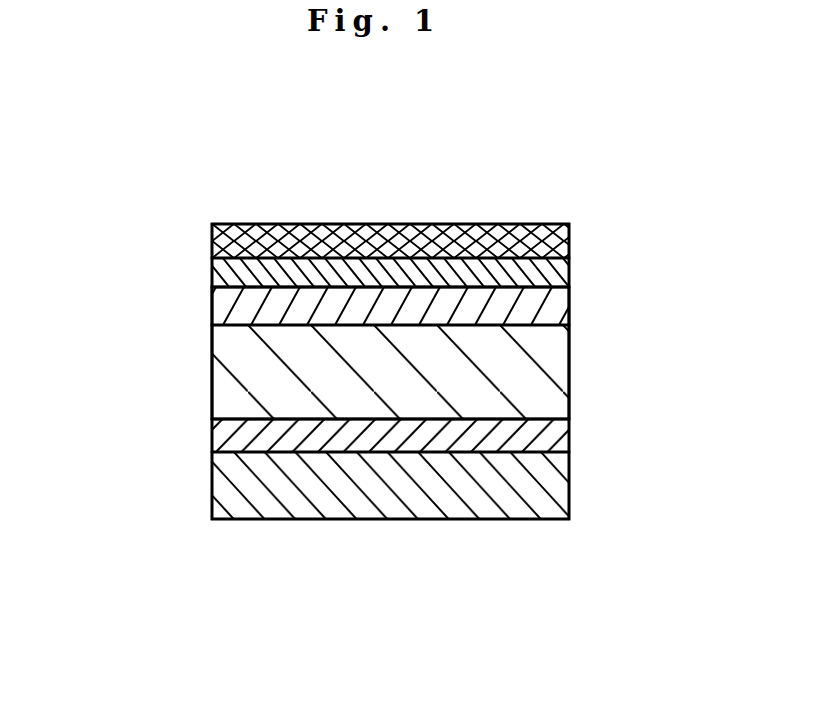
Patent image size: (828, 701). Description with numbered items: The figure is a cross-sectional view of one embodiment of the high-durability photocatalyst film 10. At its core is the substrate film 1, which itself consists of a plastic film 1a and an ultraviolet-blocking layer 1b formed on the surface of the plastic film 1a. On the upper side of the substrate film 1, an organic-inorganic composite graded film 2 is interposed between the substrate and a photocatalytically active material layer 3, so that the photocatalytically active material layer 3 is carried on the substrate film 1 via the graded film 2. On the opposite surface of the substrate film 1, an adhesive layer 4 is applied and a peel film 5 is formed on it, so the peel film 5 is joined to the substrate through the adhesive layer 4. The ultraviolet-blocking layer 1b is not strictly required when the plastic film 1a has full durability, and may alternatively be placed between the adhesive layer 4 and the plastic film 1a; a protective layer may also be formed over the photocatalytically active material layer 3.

The photocatalyst film 10 is at (476, 200).
The photocatalytically active material layer 3 is at (254, 227).
The organic-inorganic composite graded film 2 is at (566, 269).
The substrate film 1 is at (578, 287).
The ultraviolet-blocking layer 1b is at (222, 314).
The plastic film 1a is at (222, 385).
The adhesive layer 4 is at (566, 438).
The peel film 5 is at (353, 520).